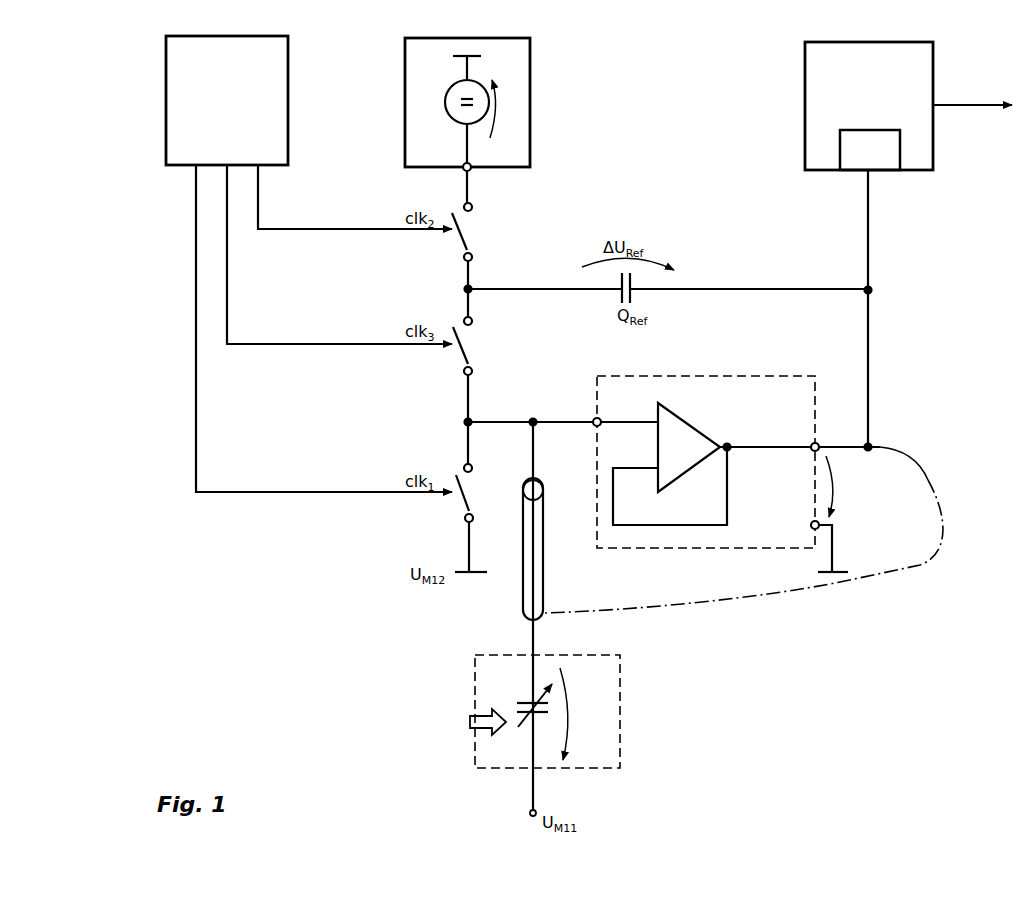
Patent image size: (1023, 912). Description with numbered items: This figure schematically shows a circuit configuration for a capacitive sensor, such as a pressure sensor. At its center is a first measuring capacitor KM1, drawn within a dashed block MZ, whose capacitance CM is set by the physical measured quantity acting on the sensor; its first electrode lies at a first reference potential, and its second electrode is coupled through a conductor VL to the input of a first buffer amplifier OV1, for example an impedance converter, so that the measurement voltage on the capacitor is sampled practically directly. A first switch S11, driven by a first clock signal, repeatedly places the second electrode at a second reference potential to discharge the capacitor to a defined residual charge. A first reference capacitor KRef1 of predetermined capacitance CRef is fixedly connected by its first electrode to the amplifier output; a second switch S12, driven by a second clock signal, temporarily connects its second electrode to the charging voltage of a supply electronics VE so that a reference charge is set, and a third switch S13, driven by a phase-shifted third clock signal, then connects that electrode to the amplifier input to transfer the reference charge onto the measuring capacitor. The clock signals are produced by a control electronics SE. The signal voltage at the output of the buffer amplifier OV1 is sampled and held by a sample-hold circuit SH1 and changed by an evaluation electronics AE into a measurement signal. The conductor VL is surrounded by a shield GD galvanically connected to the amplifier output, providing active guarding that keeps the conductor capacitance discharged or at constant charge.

The control electronics SE is at (277, 58).
The supply electronics VE is at (520, 60).
The evaluation electronics AE is at (908, 102).
The sample-hold circuit SH1 is at (870, 150).
The first switch S11 is at (465, 491).
The second switch S12 is at (462, 232).
The third switch S13 is at (464, 345).
The capacitance of the first reference capacitor CRef is at (643, 285).
The first reference capacitor KRef1 is at (632, 298).
The first buffer amplifier OV1 is at (703, 548).
The shield GD is at (543, 580).
The conductor VL is at (530, 650).
The measuring cell MZ is at (535, 732).
The first measuring capacitor KM1 is at (520, 701).
The capacitance of the measuring capacitor CM is at (537, 715).